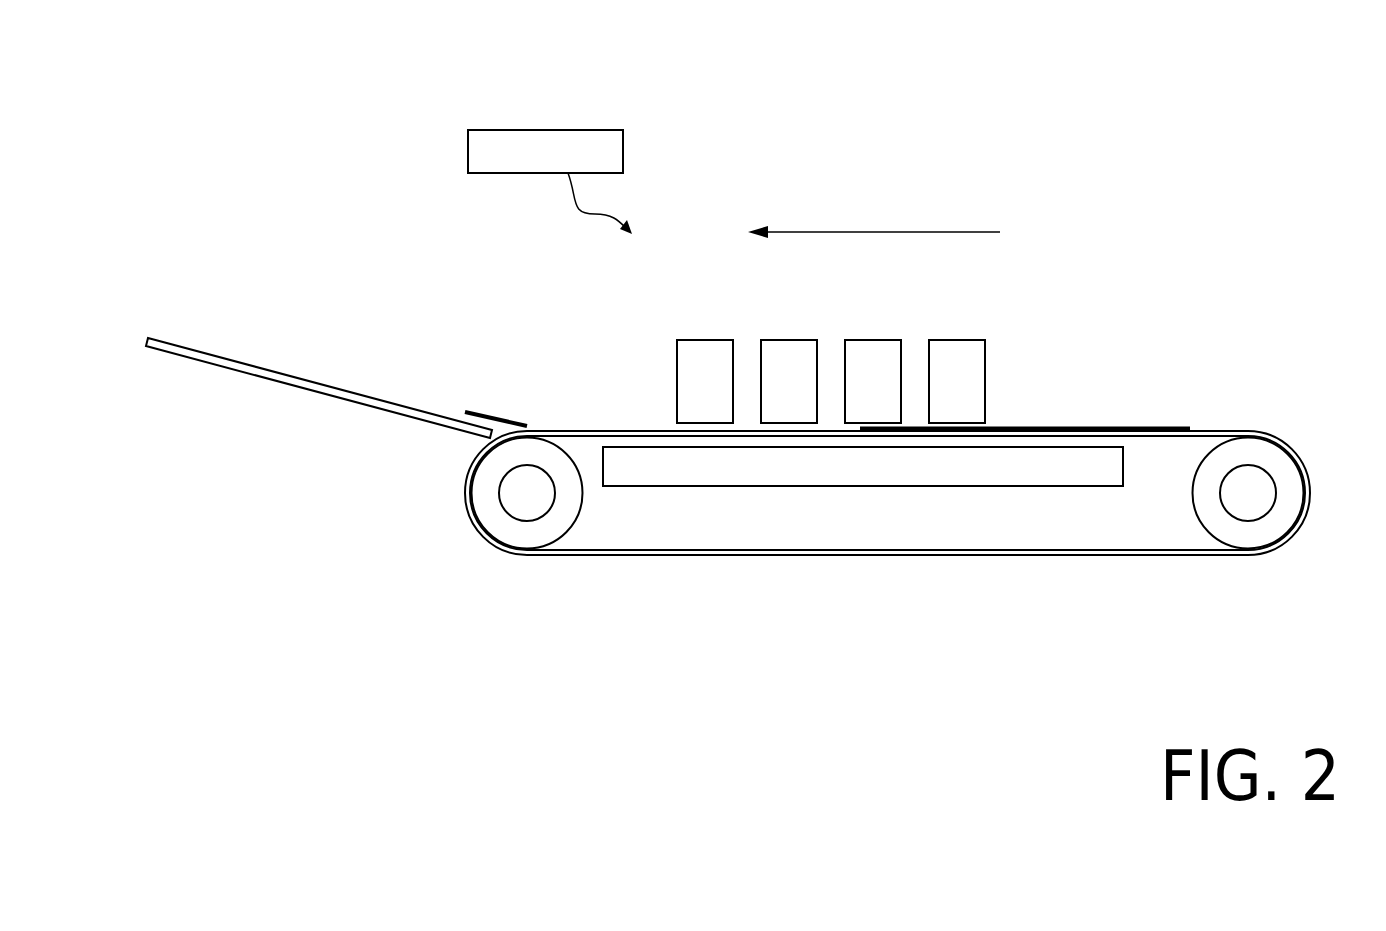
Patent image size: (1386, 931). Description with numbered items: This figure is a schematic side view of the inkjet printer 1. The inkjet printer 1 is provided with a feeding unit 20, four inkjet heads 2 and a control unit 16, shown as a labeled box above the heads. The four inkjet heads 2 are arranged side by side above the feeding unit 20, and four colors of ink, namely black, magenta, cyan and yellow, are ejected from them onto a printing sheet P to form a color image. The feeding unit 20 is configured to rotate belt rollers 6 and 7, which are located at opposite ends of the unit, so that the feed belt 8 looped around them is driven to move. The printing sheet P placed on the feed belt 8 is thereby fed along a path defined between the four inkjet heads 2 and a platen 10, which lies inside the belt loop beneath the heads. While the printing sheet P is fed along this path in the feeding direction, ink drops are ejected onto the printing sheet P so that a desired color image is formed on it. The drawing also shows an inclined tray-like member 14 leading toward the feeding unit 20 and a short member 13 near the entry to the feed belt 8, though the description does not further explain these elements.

The inkjet printer 1 is at (1272, 180).
The inkjet heads 2 is at (706, 340).
The belt roller 6 is at (1245, 535).
The belt roller 7 is at (521, 537).
The feed belt 8 is at (990, 556).
The platen 10 is at (830, 487).
The feed roller / guide 13 is at (487, 411).
The paper feed tray 14 is at (287, 374).
The control unit 16 is at (527, 130).
The feeding unit 20 is at (887, 553).
The printing sheet P is at (1178, 427).